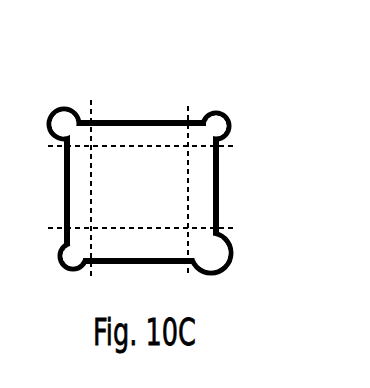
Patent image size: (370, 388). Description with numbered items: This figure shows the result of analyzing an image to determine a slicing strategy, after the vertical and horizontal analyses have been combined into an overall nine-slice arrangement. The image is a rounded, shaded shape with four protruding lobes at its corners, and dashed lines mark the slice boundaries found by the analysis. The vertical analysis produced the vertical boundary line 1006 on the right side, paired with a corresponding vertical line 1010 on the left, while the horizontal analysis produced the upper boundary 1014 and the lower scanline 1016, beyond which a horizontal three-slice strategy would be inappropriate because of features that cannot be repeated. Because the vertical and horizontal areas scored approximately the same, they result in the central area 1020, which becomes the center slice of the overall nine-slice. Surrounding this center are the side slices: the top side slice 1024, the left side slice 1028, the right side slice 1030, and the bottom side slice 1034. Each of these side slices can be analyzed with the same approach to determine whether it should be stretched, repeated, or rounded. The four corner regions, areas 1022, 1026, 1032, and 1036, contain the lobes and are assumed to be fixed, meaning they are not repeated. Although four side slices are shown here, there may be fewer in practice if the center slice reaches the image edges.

The line 1006 is at (196, 178).
The first fold line 1010 is at (94, 178).
The boundary 1014 is at (162, 148).
The scanline 1016 is at (162, 228).
The area 1020 is at (165, 196).
The area 1022 is at (66, 120).
The side slice 1024 is at (144, 114).
The area 1026 is at (218, 113).
The side slice 1028 is at (55, 185).
The side slice 1030 is at (236, 197).
The area 1032 is at (72, 251).
The side slice 1034 is at (137, 273).
The area 1036 is at (209, 256).